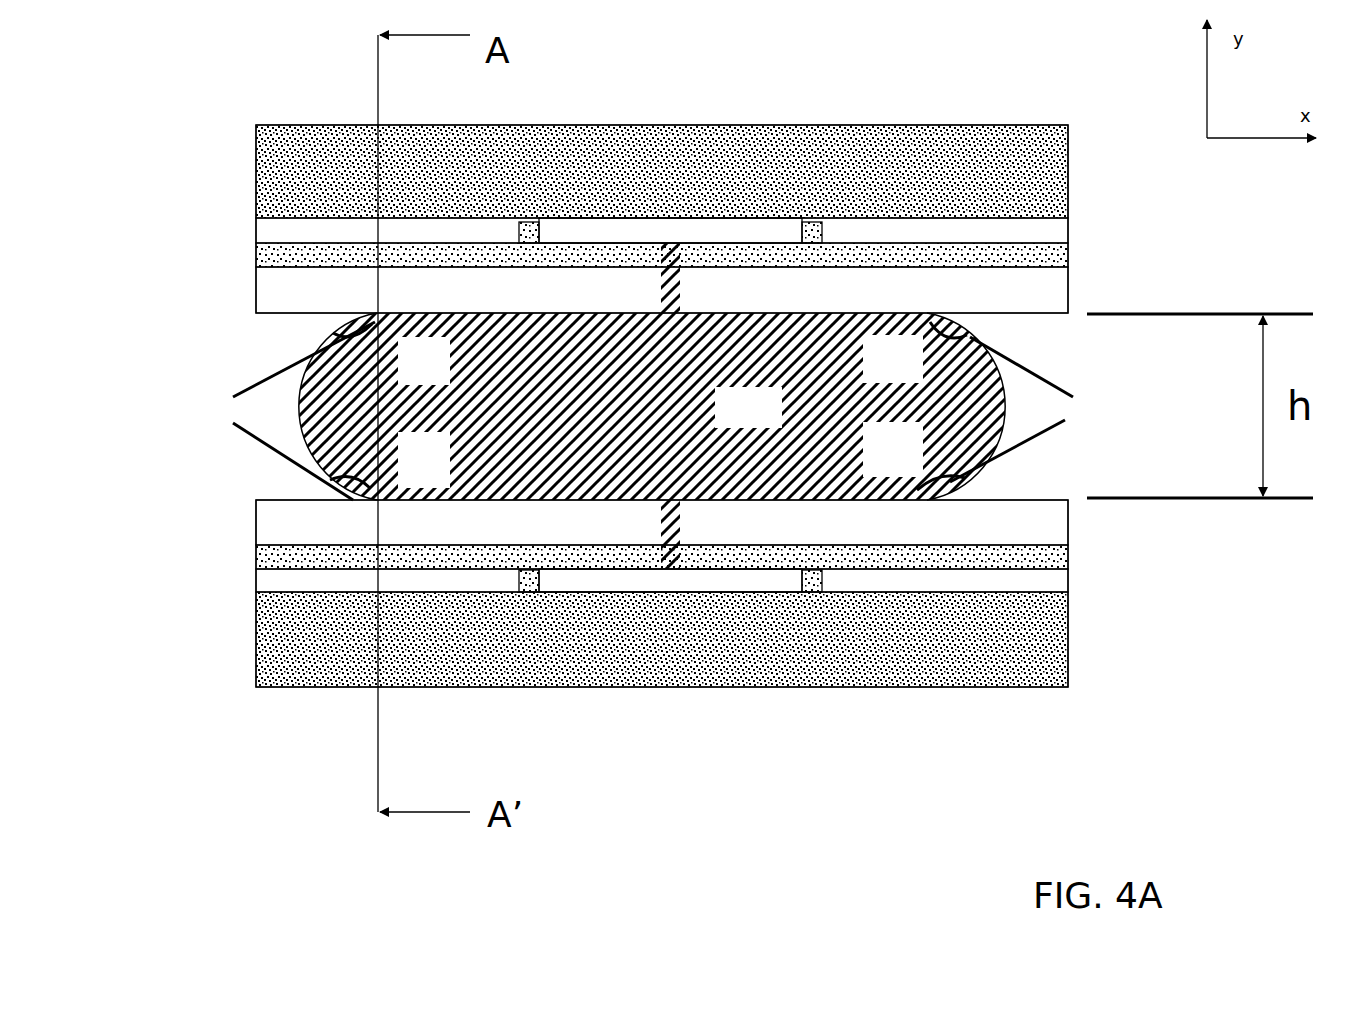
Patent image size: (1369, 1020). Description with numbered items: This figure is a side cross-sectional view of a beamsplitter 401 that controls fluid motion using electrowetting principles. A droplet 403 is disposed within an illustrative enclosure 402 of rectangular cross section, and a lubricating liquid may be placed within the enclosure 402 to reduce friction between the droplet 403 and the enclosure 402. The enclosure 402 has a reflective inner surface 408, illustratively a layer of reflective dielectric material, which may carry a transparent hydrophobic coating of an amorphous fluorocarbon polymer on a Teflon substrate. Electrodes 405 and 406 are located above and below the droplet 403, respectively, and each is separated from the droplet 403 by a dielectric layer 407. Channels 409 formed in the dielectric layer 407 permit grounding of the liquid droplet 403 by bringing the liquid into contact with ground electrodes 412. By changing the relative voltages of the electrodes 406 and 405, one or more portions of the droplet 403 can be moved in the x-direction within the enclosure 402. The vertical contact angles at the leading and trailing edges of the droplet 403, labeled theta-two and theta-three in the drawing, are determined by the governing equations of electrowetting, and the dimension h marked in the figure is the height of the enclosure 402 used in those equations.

The beamsplitter 401 is at (905, 82).
The enclosure 402 is at (257, 172).
The droplet 403 is at (333, 432).
The electrode 405 is at (1030, 227).
The electrode 406 is at (285, 232).
The dielectric layer 407 is at (267, 255).
The reflective inner surface 408 is at (1018, 285).
The channels 409 is at (673, 287).
The ground electrodes 412 is at (592, 232).